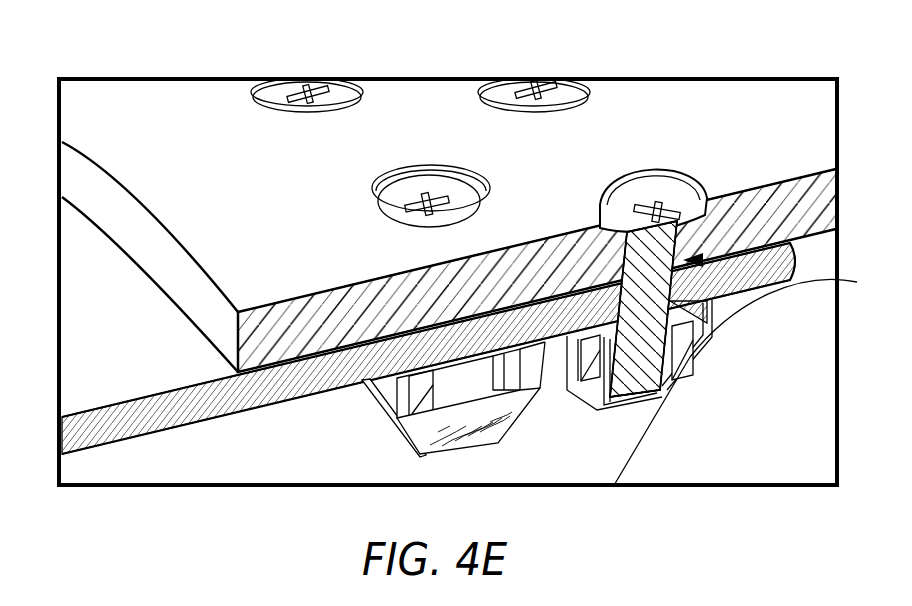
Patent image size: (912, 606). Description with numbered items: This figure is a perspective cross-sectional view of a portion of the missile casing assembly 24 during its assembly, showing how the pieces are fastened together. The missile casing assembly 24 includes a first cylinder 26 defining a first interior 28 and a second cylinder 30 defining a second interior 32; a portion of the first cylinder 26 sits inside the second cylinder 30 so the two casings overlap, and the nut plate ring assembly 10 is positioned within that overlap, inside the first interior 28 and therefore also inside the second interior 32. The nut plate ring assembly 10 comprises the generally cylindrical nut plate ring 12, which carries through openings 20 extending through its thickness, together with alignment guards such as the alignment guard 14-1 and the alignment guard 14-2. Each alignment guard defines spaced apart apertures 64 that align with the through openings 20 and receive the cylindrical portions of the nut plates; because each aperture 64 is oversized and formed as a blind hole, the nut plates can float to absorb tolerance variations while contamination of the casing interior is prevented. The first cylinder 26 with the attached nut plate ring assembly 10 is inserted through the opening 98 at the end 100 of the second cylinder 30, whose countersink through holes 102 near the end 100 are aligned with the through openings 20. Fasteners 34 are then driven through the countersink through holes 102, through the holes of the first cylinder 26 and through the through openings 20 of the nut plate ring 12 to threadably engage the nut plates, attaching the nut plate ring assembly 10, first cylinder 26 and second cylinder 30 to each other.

The nut plate ring assembly 10 is at (377, 411).
The nut plate ring 12 is at (368, 402).
The alignment guard 14-1 is at (410, 450).
The alignment guard 14-2 is at (582, 398).
The through opening 20 is at (688, 308).
The missile casing assembly 24 is at (768, 56).
The first cylinder 26 is at (75, 388).
The first interior 28 is at (97, 470).
The second cylinder 30 is at (823, 125).
The second interior 32 is at (813, 267).
The fastener 34 is at (273, 97).
The aperture 64 is at (664, 394).
The opening 98 is at (110, 238).
The end 100 is at (73, 186).
The countersink through hole 102 is at (751, 378).